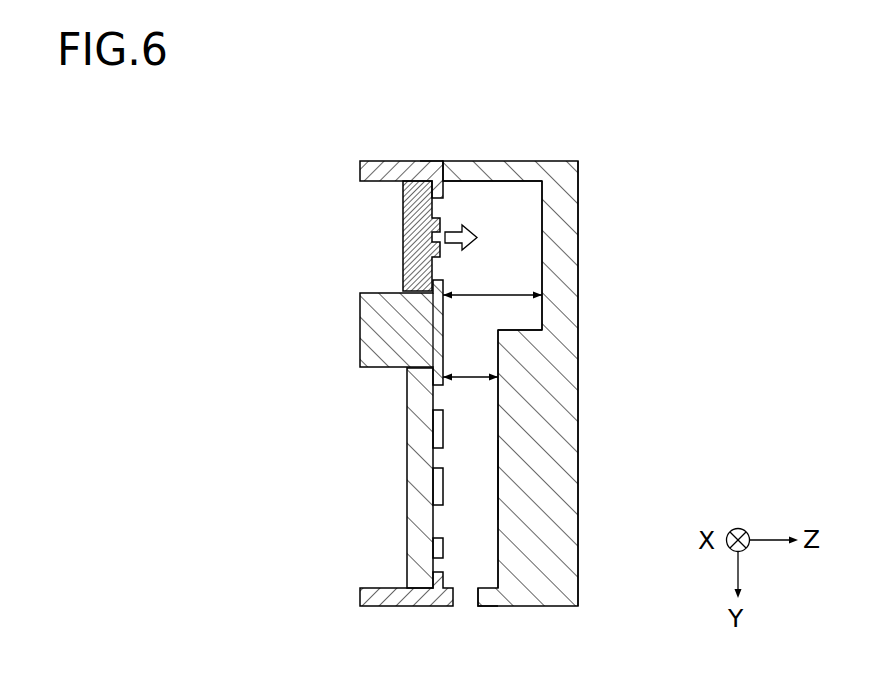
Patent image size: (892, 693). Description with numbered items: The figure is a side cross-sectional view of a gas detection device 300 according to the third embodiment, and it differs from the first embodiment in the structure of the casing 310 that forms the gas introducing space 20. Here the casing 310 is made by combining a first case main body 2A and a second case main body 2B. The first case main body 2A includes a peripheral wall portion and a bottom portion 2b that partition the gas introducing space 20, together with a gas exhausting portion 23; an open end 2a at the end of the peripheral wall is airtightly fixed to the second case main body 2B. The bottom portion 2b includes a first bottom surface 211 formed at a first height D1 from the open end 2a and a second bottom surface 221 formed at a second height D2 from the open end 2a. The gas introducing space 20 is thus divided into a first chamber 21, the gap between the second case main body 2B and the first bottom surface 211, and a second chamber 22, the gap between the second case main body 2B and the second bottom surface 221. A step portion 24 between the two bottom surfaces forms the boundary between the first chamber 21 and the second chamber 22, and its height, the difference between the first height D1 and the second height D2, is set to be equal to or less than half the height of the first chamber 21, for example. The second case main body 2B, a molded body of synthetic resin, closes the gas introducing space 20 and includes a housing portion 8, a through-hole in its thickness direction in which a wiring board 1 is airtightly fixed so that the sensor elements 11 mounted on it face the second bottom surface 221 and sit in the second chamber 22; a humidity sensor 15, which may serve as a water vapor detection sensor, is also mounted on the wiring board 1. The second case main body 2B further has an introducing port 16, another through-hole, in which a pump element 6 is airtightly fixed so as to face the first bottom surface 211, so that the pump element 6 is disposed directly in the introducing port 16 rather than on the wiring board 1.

The gas detection device 300 is at (641, 68).
The casing 310 is at (598, 72).
The second case main body 2B is at (400, 162).
The open end 2a is at (432, 162).
The first case main body 2A is at (518, 162).
The first bottom surface 211 is at (543, 190).
The first chamber 21 is at (508, 265).
The step portion 24 is at (518, 330).
The second chamber 22 is at (473, 435).
The second bottom surface 221 is at (498, 505).
The bottom portion 2b is at (578, 550).
The gas exhausting portion 23 is at (460, 598).
The pump element 6 is at (403, 233).
The introducing port 16 is at (368, 293).
The gas introducing space 20 is at (502, 218).
The first height D1 is at (492, 285).
The second height D2 is at (470, 364).
The wiring board 1 is at (407, 408).
The sensor element 11 is at (440, 430).
The humidity sensor 15 is at (435, 547).
The housing portion 8 is at (370, 588).